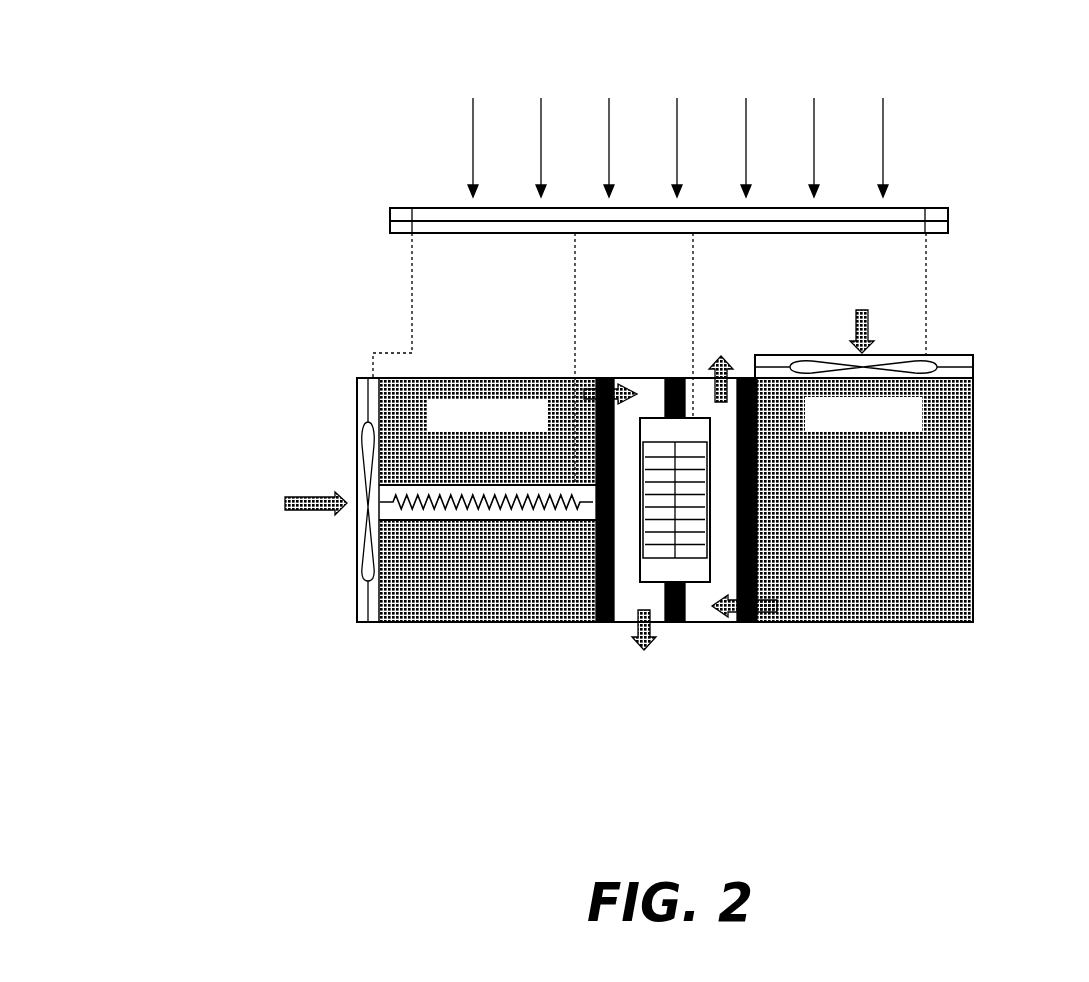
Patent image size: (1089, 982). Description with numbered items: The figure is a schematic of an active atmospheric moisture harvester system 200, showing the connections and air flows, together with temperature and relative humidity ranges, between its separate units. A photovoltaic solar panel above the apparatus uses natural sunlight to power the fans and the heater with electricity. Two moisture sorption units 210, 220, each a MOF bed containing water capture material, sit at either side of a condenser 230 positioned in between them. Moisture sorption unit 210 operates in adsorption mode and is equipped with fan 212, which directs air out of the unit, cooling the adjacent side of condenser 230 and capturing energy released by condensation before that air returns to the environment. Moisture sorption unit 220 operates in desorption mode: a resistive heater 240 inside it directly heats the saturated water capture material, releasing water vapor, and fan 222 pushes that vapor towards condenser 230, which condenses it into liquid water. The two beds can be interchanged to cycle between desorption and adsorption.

The system 200 is at (303, 50).
The moisture sorption unit 210 is at (865, 500).
The fan 212 is at (900, 387).
The moisture sorption unit 220 is at (487, 500).
The fan 222 is at (369, 528).
The condenser 230 is at (693, 570).
The resistive heater 240 is at (473, 513).